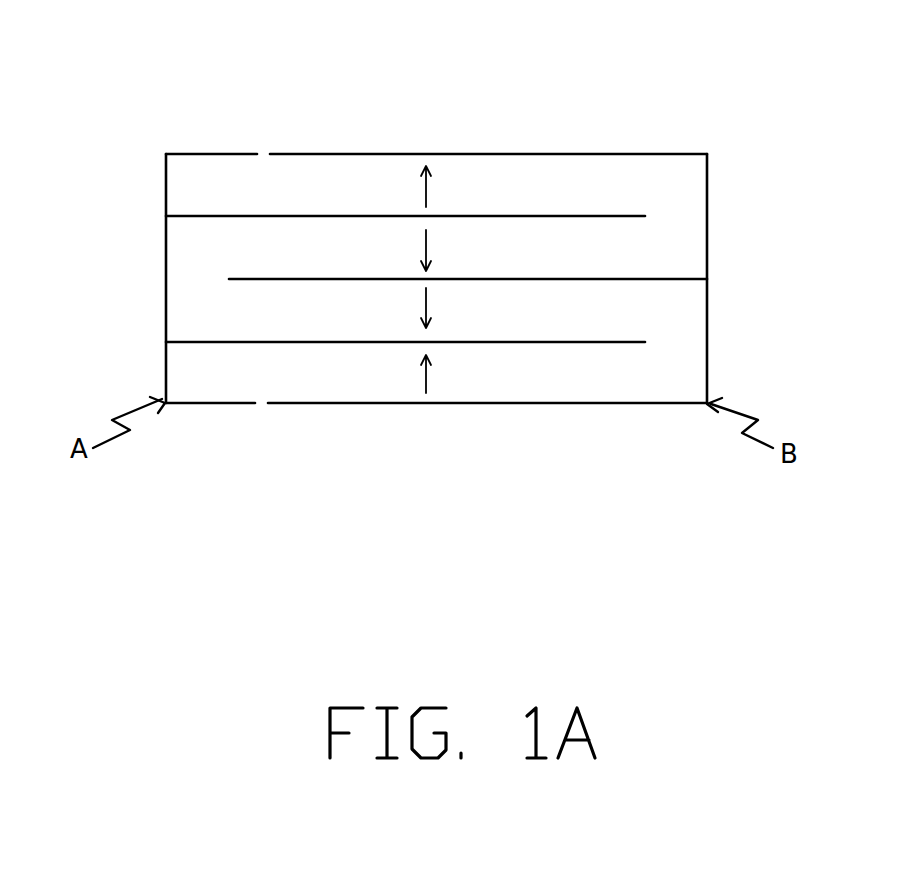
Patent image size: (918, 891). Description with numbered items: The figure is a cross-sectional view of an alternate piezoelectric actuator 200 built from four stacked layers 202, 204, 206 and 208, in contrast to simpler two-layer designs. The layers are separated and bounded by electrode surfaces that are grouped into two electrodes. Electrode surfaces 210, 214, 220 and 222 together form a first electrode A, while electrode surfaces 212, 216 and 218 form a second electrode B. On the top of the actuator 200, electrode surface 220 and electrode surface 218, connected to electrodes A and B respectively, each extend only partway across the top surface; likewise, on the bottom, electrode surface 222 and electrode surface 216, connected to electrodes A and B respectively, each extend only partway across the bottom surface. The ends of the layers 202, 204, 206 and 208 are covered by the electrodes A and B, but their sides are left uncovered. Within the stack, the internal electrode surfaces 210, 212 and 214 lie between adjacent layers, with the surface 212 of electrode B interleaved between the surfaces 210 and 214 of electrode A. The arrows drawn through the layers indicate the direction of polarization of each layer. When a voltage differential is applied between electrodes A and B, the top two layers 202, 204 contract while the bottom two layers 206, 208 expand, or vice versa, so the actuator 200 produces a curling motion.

The piezoelectric actuator 200 is at (710, 114).
The layer 202 is at (178, 182).
The layer 204 is at (184, 240).
The layer 206 is at (180, 310).
The layer 208 is at (178, 370).
The electrode surface 210 is at (290, 216).
The electrode surface 212 is at (655, 280).
The electrode surface 214 is at (392, 343).
The electrode surface 216 is at (655, 405).
The electrode surface 218 is at (623, 155).
The electrode surface 220 is at (233, 153).
The electrode surface 222 is at (210, 403).